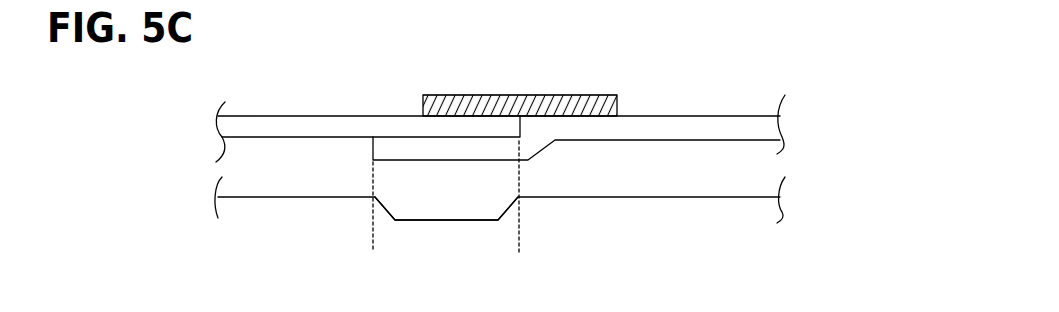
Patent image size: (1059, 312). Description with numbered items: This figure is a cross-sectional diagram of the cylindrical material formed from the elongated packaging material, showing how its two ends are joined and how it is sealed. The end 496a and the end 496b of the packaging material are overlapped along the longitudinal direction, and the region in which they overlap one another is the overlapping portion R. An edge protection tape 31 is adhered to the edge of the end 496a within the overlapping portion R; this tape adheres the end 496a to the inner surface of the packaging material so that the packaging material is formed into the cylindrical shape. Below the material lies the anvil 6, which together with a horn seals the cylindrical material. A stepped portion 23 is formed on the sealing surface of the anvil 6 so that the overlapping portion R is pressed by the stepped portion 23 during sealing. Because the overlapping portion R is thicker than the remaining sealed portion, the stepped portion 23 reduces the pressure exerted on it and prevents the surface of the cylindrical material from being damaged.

The end 496a is at (424, 131).
The end 496b is at (462, 153).
The overlapping portion R is at (487, 91).
The edge protection tape 31 is at (569, 94).
The stepped portion 23 is at (485, 198).
The anvil 6 is at (737, 199).